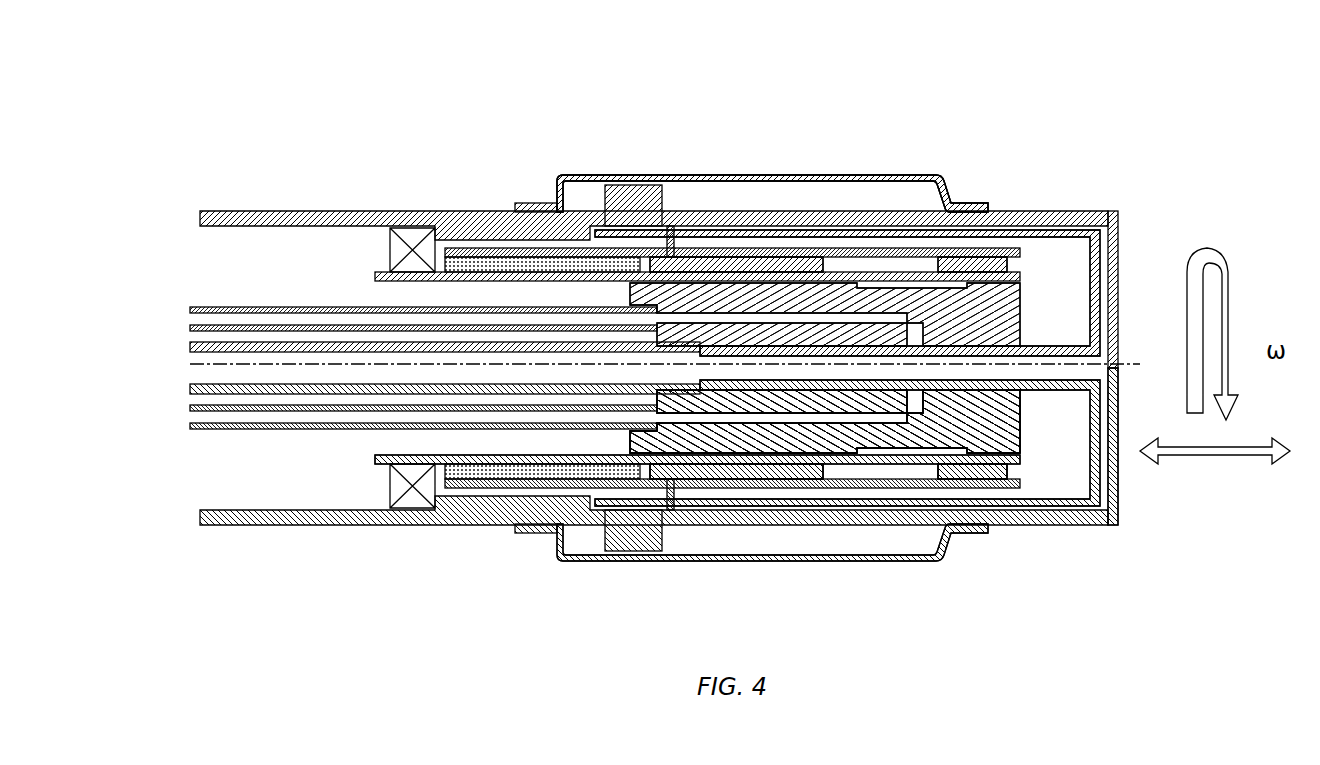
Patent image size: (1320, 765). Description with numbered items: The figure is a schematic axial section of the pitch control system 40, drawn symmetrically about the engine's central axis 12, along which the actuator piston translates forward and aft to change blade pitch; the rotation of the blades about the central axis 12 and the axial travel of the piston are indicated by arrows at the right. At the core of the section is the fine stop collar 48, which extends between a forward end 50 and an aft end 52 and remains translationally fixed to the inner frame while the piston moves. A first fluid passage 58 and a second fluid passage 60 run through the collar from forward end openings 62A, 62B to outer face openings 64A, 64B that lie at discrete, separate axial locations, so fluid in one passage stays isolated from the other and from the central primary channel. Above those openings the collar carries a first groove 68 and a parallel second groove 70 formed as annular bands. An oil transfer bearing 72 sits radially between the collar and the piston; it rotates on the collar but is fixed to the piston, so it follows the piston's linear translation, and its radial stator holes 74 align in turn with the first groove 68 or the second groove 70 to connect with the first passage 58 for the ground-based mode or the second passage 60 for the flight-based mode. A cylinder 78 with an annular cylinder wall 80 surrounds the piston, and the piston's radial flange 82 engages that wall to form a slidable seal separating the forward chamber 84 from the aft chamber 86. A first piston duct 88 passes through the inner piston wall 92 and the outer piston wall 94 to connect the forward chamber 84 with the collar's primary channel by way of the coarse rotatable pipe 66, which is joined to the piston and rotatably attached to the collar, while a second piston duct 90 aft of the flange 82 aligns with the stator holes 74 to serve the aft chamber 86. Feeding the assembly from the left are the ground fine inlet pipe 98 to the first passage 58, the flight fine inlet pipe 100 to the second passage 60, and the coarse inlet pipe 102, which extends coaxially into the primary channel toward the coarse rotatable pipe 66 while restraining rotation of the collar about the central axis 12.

The central axis 12 is at (1122, 366).
The pitch control system 40 is at (513, 91).
The fine stop collar 48 is at (1010, 308).
The forward end 50 is at (683, 392).
The aft end 52 is at (990, 450).
The first fluid passage 58 is at (700, 295).
The second fluid passage 60 is at (830, 422).
The forward end opening 62A is at (563, 208).
The forward end opening 62B is at (655, 478).
The outer face opening 64A is at (733, 265).
The outer face opening 64B is at (907, 450).
The coarse rotatable pipe 66 is at (1075, 395).
The first groove 68 is at (778, 288).
The second groove 70 is at (873, 452).
The oil transfer bearing 72 is at (1022, 460).
The stator holes 74 is at (388, 242).
The cylinder 78 is at (940, 178).
The annular cylinder wall 80 is at (772, 193).
The flange 82 is at (630, 186).
The forward chamber 84 is at (572, 540).
The aft chamber 86 is at (875, 195).
The first piston duct 88 is at (1092, 228).
The second piston duct 90 is at (674, 226).
The inner piston wall 92 is at (1078, 262).
The outer piston wall 94 is at (1110, 526).
The ground fine inlet pipe 98 is at (190, 310).
The flight fine inlet pipe 100 is at (190, 418).
The coarse inlet pipe 102 is at (190, 375).